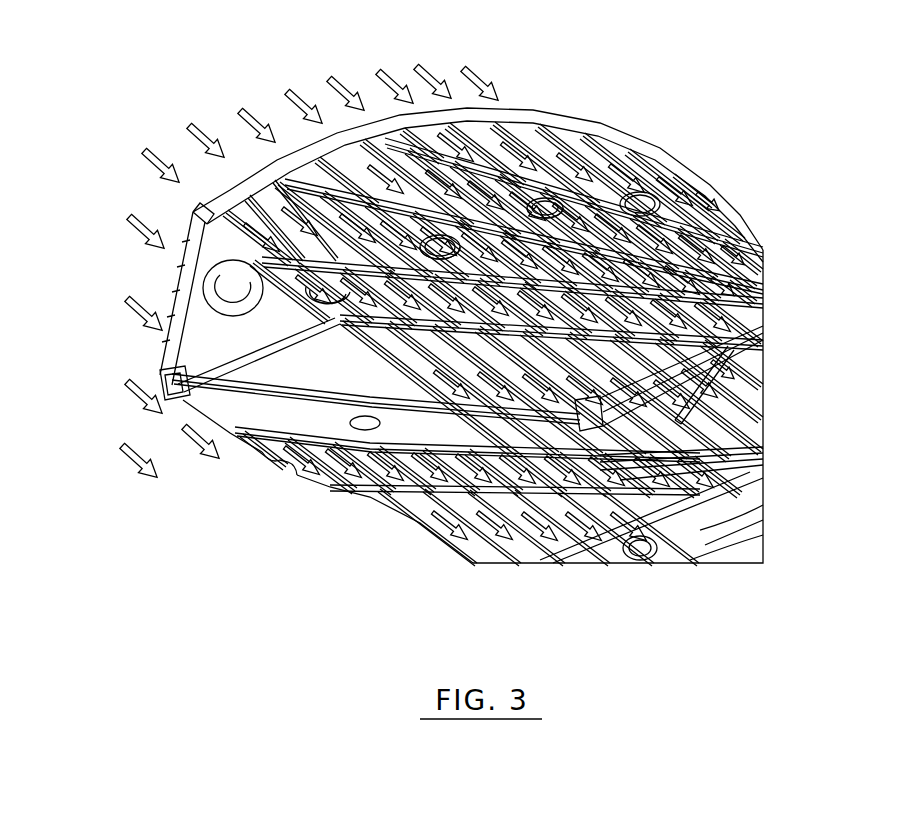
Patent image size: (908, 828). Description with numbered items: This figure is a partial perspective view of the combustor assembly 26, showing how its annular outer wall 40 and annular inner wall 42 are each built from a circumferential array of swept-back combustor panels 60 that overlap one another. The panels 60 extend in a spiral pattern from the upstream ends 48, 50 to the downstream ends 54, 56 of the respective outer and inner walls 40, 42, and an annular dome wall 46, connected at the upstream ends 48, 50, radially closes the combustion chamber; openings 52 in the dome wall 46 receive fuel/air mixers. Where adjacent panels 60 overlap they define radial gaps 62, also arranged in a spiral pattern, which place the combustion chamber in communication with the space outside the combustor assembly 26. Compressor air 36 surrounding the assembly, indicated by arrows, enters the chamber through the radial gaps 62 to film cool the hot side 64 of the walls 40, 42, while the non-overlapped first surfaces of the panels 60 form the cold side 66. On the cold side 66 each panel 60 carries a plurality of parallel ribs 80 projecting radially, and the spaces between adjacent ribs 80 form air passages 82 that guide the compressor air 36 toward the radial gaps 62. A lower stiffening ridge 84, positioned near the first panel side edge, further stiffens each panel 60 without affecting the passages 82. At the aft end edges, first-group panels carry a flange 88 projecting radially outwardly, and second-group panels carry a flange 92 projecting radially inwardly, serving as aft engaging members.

The combustor assembly 26 is at (430, 527).
The compressor air 36 is at (163, 160).
The annular outer wall 40 is at (672, 190).
The annular inner wall 42 is at (390, 515).
The annular dome wall 46 is at (205, 255).
The upstream end of the annular outer wall 48 is at (467, 120).
The upstream end of the annular inner wall 50 is at (188, 412).
The openings 52 is at (222, 308).
The downstream end of the annular outer wall 54 is at (745, 362).
The downstream end of the annular inner wall 56 is at (753, 482).
The swept-back combustor panels 60 is at (763, 305).
The radial gaps 62 is at (270, 458).
The hot side 64 is at (333, 470).
The cold side 66 is at (763, 283).
The ribs 80 is at (732, 213).
The air passages 82 is at (287, 207).
The ridge 84 is at (320, 197).
The flange 88 is at (755, 378).
The flange 92 is at (573, 552).